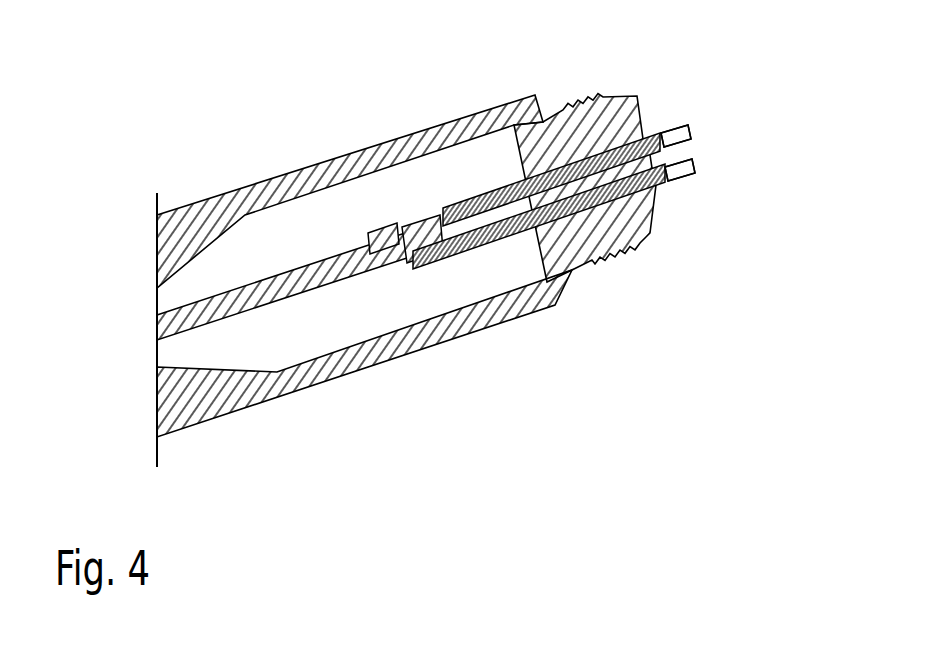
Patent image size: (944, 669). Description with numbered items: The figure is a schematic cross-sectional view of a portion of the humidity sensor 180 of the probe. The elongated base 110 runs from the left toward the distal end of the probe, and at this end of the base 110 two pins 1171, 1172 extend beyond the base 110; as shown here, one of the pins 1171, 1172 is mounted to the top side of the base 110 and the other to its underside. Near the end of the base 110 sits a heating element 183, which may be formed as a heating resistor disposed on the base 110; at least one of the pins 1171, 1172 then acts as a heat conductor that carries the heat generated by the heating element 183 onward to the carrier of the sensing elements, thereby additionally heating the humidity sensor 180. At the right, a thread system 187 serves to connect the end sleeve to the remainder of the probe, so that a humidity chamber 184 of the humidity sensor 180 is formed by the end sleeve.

The base 110 is at (305, 291).
The humidity sensor 180 is at (752, 101).
The heating element 183 is at (377, 228).
The humidity chamber 184 is at (740, 157).
The thread system 187 is at (607, 97).
The pin 1171 is at (667, 125).
The pin 1172 is at (685, 184).